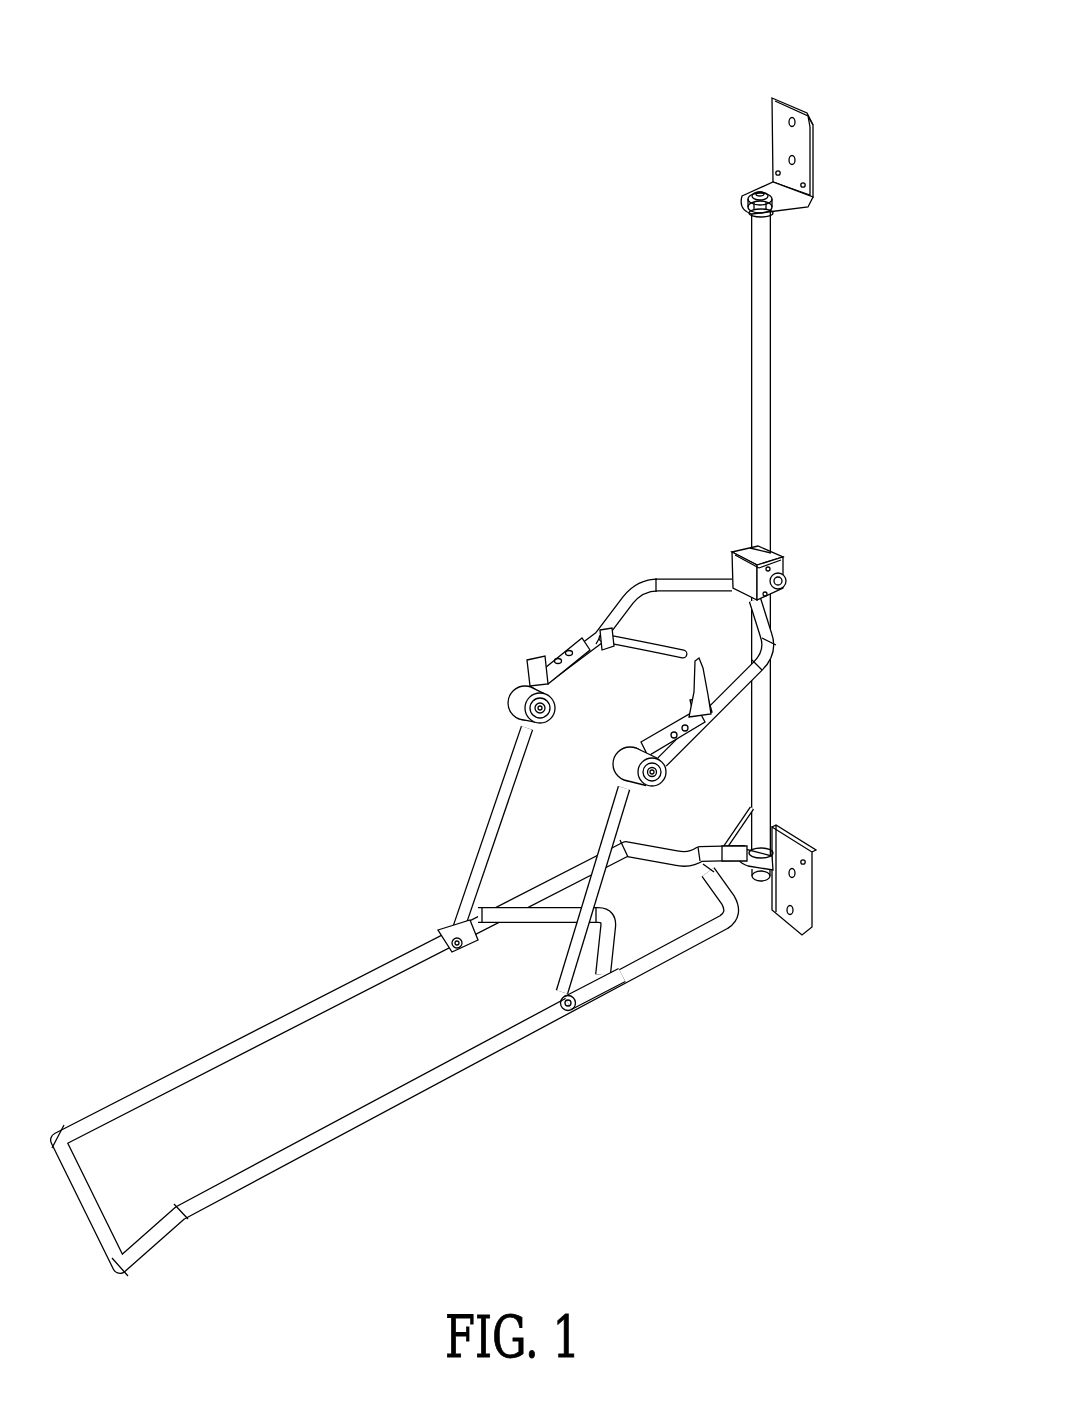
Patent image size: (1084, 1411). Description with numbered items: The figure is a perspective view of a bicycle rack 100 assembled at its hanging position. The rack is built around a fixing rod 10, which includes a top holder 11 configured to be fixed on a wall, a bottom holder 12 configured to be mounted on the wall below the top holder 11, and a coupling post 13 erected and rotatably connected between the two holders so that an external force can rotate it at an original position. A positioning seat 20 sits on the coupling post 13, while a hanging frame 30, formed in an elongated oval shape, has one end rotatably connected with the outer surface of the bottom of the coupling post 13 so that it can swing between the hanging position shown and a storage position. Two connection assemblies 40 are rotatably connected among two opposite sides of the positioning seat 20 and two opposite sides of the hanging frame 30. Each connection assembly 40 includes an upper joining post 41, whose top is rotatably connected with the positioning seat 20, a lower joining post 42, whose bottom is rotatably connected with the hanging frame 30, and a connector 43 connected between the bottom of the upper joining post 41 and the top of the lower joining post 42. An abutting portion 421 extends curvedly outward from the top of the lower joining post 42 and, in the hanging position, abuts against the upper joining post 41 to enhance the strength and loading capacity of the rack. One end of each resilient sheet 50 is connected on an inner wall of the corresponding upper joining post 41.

The bicycle rack 100 is at (346, 201).
The fixing rod 10 is at (868, 74).
The top holder 11 is at (814, 152).
The bottom holder 12 is at (815, 890).
The coupling post 13 is at (766, 317).
The positioning seat 20 is at (813, 534).
The hanging frame 30 is at (400, 1092).
The connection assembly 40 is at (410, 480).
The upper joining post 41 is at (625, 605).
The lower joining post 42 is at (503, 790).
The abutting portion 421 is at (525, 665).
The connector 43 is at (510, 694).
The resilient sheet 50 is at (663, 652).